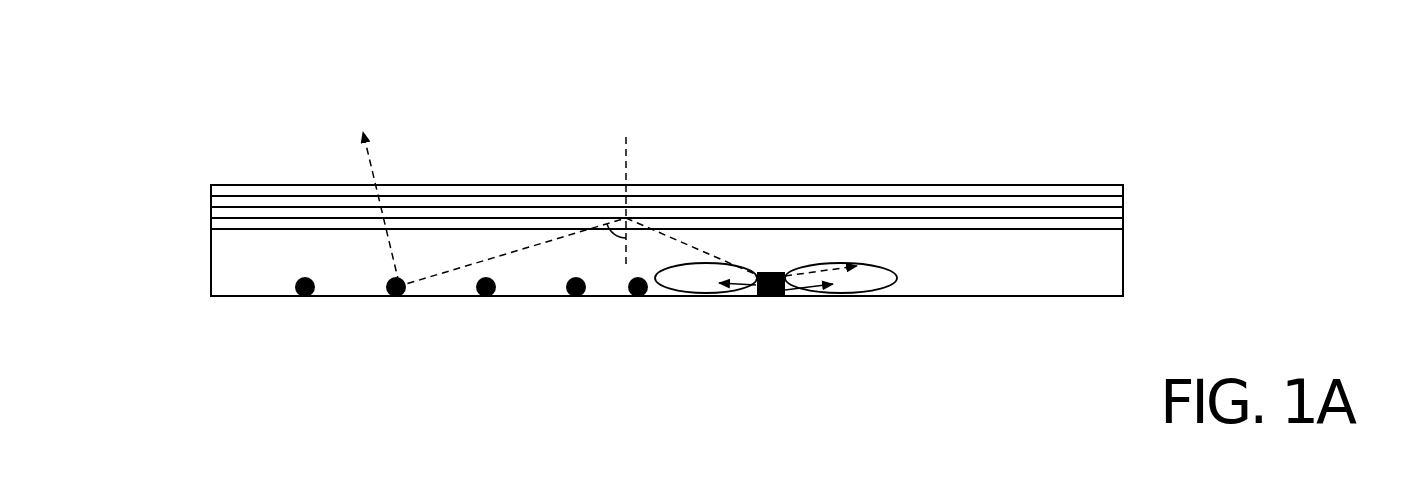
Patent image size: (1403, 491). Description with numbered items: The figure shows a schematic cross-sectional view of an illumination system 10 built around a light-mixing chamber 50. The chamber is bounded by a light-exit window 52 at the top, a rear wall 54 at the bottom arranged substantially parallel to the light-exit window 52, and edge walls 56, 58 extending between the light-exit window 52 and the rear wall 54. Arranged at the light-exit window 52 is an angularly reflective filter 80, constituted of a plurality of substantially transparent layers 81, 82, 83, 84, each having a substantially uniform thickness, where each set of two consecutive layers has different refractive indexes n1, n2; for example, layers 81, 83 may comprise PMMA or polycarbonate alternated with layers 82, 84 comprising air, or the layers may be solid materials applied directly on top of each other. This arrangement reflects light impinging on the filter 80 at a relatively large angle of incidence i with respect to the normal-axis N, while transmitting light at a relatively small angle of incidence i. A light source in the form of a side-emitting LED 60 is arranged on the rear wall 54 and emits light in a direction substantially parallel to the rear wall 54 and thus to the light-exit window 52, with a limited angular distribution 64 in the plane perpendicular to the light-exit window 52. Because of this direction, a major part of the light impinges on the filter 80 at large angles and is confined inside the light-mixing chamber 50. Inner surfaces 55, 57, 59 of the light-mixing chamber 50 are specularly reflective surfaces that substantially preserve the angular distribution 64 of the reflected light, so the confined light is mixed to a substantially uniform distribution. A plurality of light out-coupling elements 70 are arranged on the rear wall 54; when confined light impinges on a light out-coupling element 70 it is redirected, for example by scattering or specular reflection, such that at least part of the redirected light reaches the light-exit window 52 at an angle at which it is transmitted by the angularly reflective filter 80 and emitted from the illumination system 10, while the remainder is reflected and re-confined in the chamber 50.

The illumination system 10 is at (1053, 78).
The light-mixing chamber 50 is at (937, 270).
The light-exit window 52 is at (1078, 232).
The rear wall 54 is at (540, 298).
The inner surface 55 is at (1003, 293).
The edge wall 56 is at (1123, 236).
The inner surface 57 is at (1122, 275).
The edge wall 58 is at (208, 262).
The inner surface 59 is at (213, 275).
The side-emitting LED 60 is at (772, 298).
The angular distribution 64 is at (857, 278).
The light out-coupling element 70 is at (305, 297).
The angularly reflective filter 80 is at (202, 185).
The transparent layer 81 is at (239, 227).
The transparent layer 82 is at (288, 213).
The transparent layer 83 is at (437, 202).
The transparent layer 84 is at (487, 190).
The refractive index n1 is at (860, 202).
The refractive index n2 is at (807, 190).
The normal-axis N is at (627, 146).
The angle of incidence i is at (613, 243).